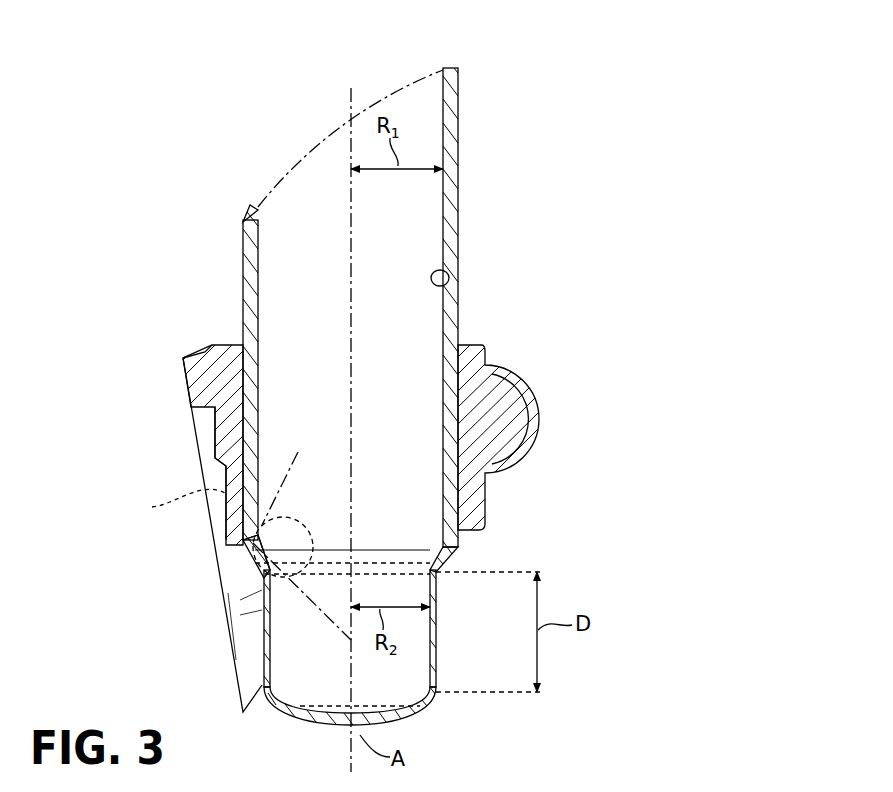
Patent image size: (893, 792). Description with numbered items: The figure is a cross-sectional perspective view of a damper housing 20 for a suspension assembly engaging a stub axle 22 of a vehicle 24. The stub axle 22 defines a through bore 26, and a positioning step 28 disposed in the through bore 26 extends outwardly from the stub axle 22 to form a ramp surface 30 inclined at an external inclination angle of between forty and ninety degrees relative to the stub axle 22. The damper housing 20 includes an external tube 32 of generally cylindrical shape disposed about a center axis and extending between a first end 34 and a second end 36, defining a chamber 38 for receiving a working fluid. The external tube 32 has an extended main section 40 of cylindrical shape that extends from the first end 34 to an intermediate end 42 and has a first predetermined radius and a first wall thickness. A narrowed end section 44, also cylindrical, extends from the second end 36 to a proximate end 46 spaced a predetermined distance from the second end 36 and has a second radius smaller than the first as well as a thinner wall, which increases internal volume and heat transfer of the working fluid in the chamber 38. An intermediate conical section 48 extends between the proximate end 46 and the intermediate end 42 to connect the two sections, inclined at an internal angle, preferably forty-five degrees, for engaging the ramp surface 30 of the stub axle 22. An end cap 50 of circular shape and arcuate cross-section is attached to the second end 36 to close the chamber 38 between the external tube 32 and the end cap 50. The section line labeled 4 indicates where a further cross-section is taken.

The damper housing 20 is at (489, 152).
The stub axle 22 is at (190, 358).
The vehicle 24 is at (130, 268).
The through bore 26 is at (215, 448).
The positioning step 28 is at (250, 556).
The ramp surface 30 is at (266, 548).
The external tube 32 is at (461, 116).
The first end 34 is at (447, 69).
The second end 36 is at (438, 694).
The chamber 38 is at (448, 279).
The extended main section 40 is at (460, 210).
The intermediate end 42 is at (452, 549).
The narrowed end section 44 is at (437, 646).
The proximate end 46 is at (437, 573).
The intermediate conical section 48 is at (434, 566).
The end cap 50 is at (312, 723).
The section line 4 is at (302, 532).